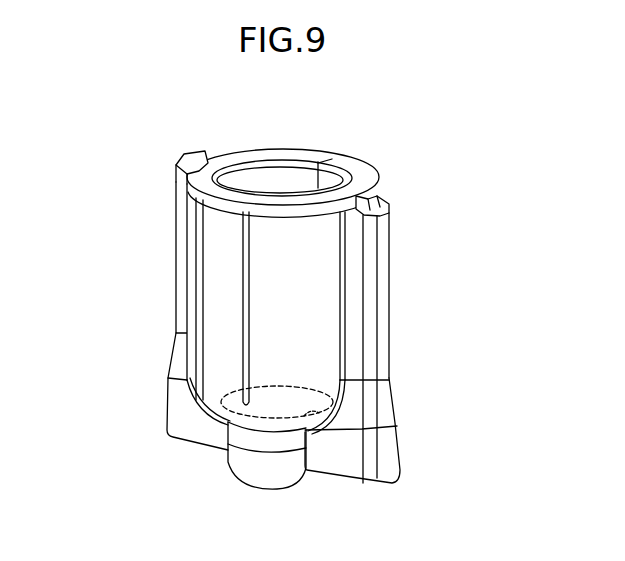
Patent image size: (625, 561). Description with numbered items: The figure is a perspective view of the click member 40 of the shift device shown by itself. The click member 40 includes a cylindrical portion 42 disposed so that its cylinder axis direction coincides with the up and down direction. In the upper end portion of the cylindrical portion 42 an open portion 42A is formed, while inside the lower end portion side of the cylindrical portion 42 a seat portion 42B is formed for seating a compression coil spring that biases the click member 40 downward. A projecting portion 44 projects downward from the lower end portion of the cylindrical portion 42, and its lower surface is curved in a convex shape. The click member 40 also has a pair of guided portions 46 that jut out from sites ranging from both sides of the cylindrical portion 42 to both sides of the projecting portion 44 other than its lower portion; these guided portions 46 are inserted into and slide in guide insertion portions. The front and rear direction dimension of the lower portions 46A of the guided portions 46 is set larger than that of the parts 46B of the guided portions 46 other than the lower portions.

The click member 40 is at (307, 313).
The cylindrical portion 42 is at (216, 281).
The open portion 42A is at (282, 160).
The seat portion 42B is at (309, 418).
The projecting portion 44 is at (240, 458).
The guided portions 46 is at (176, 238).
The lower portions 46A is at (177, 413).
The parts other than the lower portions 46B is at (177, 206).